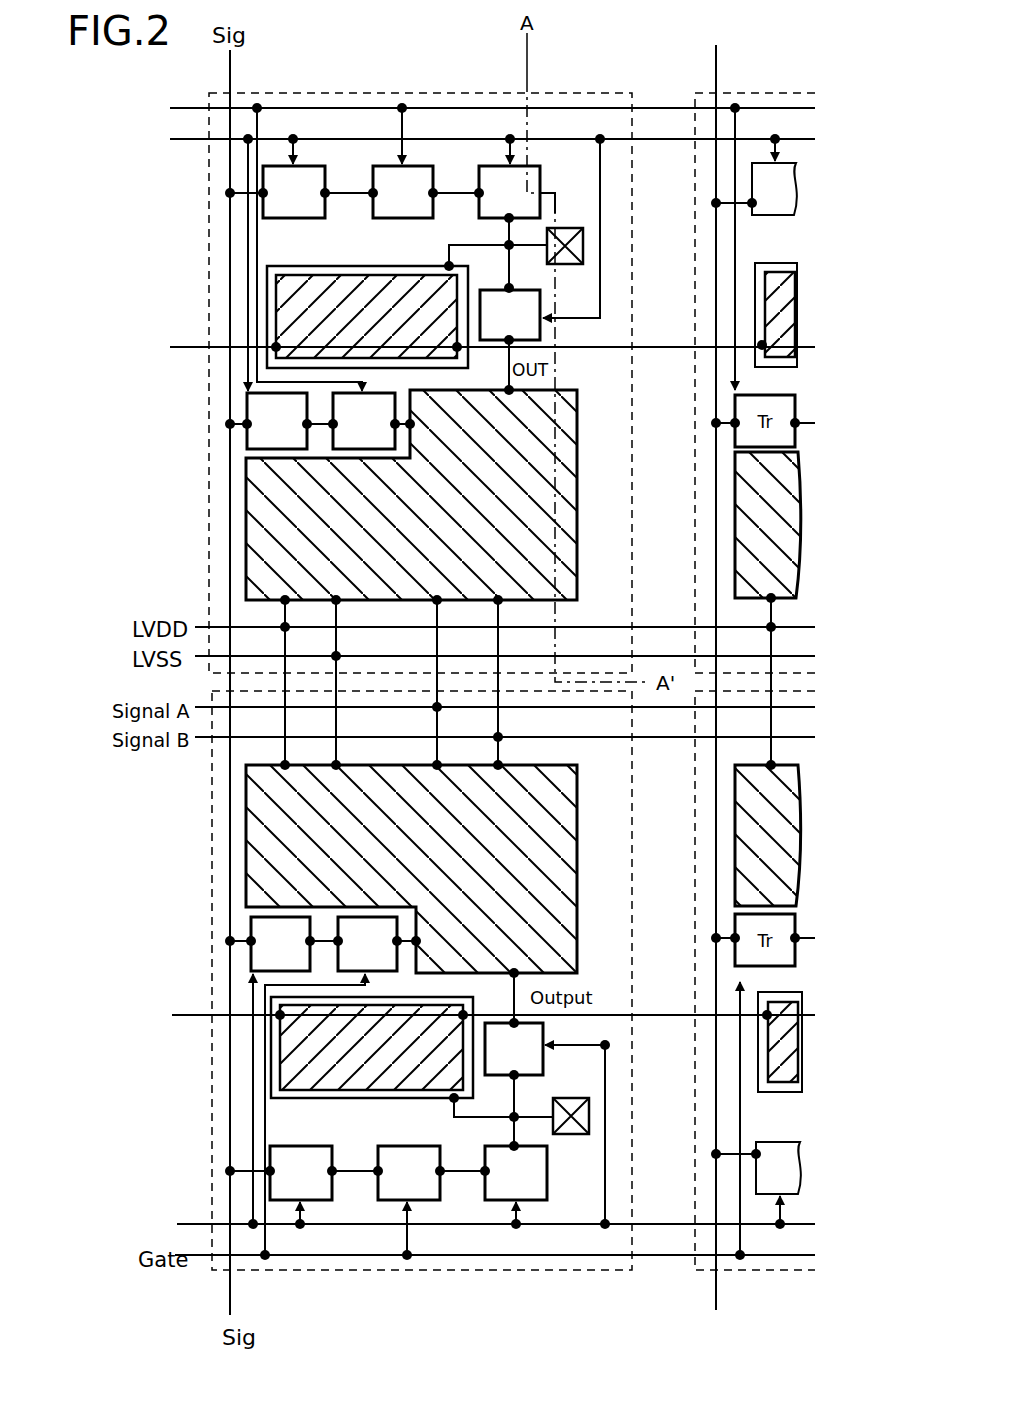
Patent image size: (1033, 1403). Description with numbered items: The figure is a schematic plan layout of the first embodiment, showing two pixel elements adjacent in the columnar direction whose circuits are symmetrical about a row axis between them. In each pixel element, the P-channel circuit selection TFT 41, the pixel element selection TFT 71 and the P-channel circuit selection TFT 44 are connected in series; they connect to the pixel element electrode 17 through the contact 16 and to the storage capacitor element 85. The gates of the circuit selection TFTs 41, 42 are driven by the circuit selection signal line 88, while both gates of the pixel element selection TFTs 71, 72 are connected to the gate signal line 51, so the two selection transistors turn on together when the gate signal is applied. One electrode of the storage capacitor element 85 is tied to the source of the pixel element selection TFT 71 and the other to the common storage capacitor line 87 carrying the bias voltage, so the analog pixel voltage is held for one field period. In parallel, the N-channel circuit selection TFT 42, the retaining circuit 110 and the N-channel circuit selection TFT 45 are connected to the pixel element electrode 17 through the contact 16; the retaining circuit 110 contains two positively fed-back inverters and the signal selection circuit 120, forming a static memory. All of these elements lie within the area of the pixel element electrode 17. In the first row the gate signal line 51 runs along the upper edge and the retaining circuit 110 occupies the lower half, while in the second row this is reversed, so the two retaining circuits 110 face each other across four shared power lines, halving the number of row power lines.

The contact 16 is at (583, 243).
The pixel element electrode 17 is at (209, 545).
The P-channel circuit selection TFT 41 is at (313, 168).
The N-channel circuit selection TFT 42 is at (278, 682).
The P-channel circuit selection TFT 44 is at (495, 168).
The N-channel circuit selection TFT 45 is at (541, 302).
The gate signal line 51 is at (449, 675).
The pixel element selection TFT 71 is at (419, 168).
The N-channel TFT 72 is at (365, 682).
The storage capacitor element 85 is at (280, 292).
The common storage capacitor line 87 is at (461, 682).
The circuit selection signal line 88 is at (430, 676).
The retaining circuit 110 is at (252, 486).
The signal selection circuit 120 is at (540, 525).